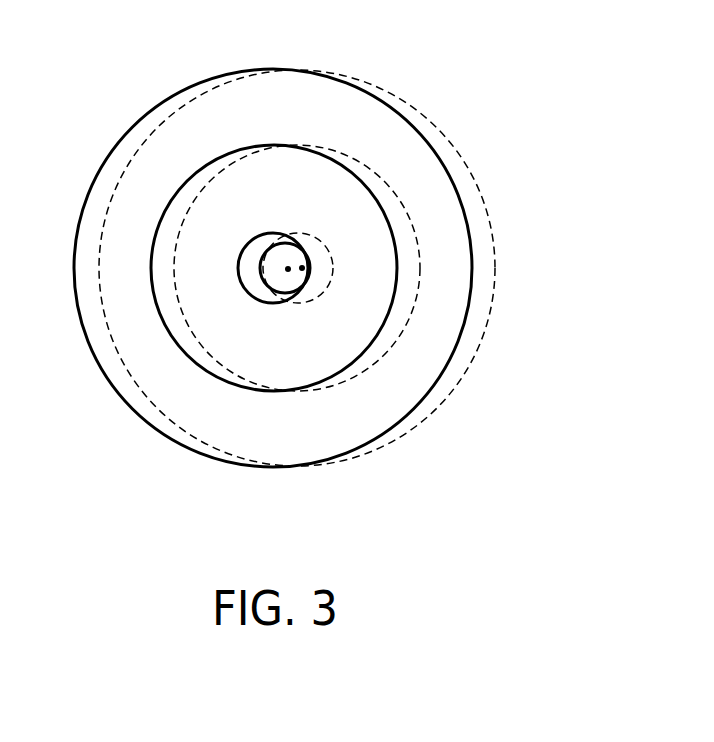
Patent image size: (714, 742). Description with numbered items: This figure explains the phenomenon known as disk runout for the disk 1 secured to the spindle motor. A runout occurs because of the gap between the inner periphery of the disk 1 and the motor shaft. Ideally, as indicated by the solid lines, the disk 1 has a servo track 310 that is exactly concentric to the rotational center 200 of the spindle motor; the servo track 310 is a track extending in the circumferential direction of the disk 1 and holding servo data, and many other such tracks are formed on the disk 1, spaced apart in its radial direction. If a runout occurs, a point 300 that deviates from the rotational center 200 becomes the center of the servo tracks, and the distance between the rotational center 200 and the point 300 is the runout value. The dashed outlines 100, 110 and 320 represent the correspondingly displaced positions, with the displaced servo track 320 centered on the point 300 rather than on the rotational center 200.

The disk 1 is at (193, 88).
The first body (shifted position) 100 is at (320, 297).
The outer periphery (shifted position) 110 is at (468, 365).
The rotational center 200 is at (288, 270).
The point 300 is at (303, 268).
The servo track 310 is at (250, 145).
The intermediate ring (shifted position) 320 is at (377, 172).